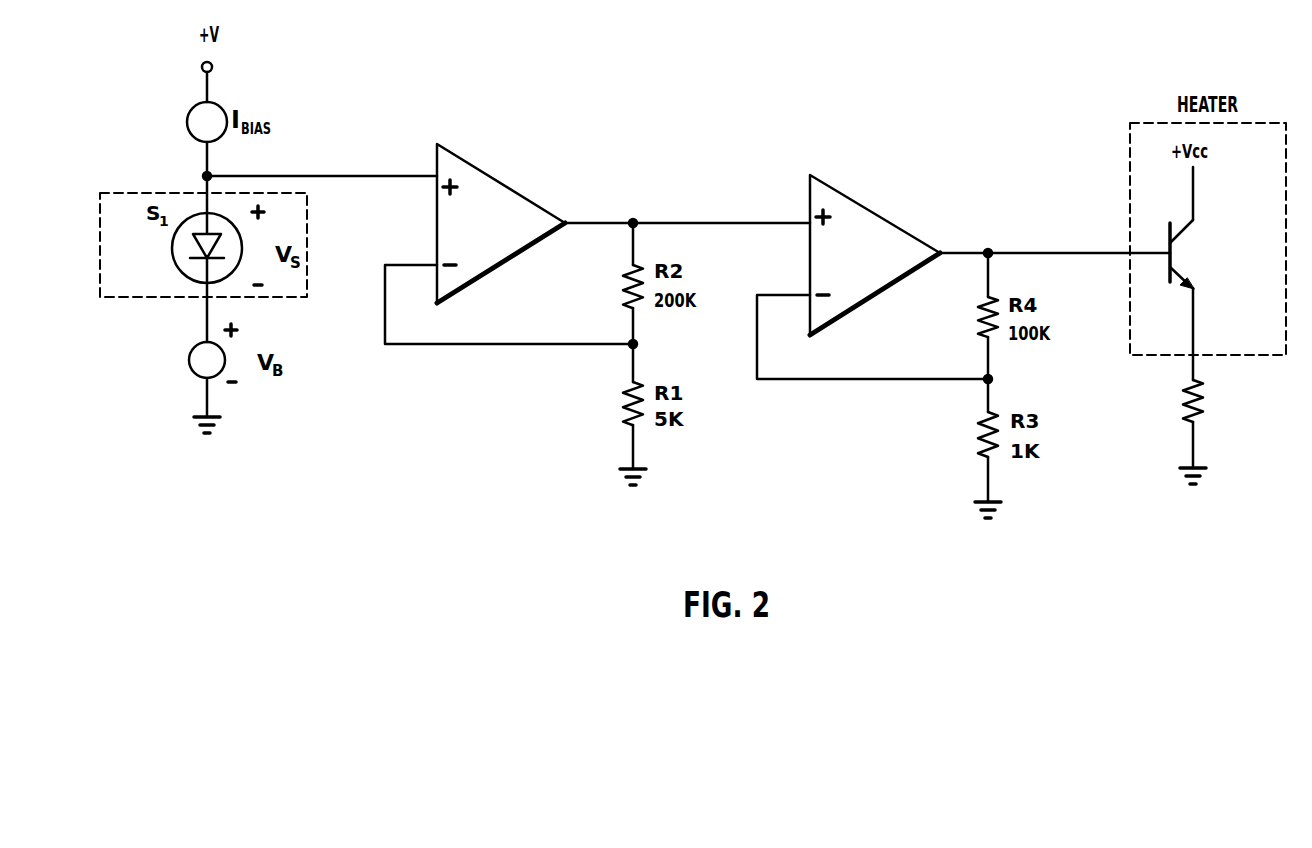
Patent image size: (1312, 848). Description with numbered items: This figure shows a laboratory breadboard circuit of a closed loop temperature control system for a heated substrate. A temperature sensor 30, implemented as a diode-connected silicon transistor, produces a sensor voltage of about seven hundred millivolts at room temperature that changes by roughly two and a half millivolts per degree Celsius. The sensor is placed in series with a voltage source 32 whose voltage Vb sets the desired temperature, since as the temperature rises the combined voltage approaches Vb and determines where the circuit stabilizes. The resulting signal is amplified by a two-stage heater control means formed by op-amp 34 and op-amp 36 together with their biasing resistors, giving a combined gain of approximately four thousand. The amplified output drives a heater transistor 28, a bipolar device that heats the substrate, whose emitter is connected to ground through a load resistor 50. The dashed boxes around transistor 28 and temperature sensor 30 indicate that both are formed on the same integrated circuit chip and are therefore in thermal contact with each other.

The transistor 28 is at (1200, 218).
The temperature sensor 30 is at (179, 262).
The voltage source 32 is at (190, 369).
The op-amp 34 is at (503, 182).
The op-amp 36 is at (873, 212).
The heater load resistor RL 50 is at (1212, 404).